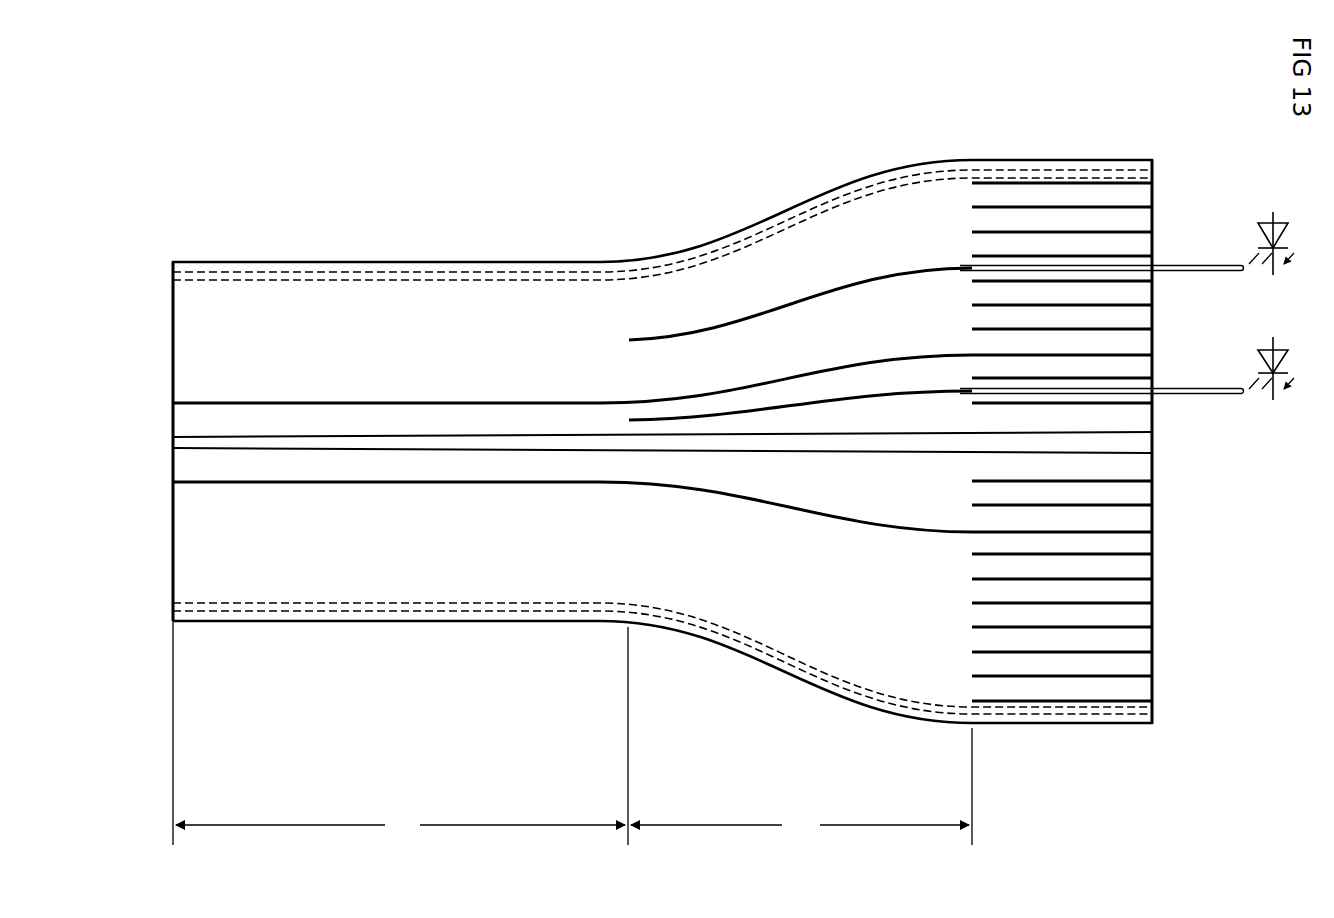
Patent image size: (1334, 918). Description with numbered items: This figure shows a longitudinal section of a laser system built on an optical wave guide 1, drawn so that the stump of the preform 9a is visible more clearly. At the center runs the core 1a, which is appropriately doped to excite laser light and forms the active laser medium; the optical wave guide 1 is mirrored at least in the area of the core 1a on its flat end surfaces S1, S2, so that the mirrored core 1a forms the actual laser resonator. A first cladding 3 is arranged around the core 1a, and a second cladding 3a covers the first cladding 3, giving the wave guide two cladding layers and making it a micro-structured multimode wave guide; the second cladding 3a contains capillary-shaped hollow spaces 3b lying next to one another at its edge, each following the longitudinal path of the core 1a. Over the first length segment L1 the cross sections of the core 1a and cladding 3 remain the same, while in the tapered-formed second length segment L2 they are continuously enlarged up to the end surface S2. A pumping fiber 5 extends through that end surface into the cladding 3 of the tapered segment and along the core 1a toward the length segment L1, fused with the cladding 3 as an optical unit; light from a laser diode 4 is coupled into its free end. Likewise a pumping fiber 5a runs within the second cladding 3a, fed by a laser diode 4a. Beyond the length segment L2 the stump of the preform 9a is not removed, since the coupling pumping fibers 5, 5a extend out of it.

The optical wave guide 1 is at (437, 254).
The core 1a is at (304, 445).
The cladding 3 is at (390, 401).
The second cladding 3a is at (326, 292).
The capillary-shaped hollow spaces 3b is at (520, 271).
The laser diode 4 is at (1258, 358).
The laser diode 4a is at (1258, 232).
The pumping fiber 5 is at (966, 390).
The pumping fiber 5a is at (952, 267).
The stump of the preform 9a is at (1106, 768).
The end surface S1 is at (170, 442).
The end surface S2 is at (1153, 445).
The first length segment L1 is at (400, 733).
The second length segment L2 is at (801, 786).